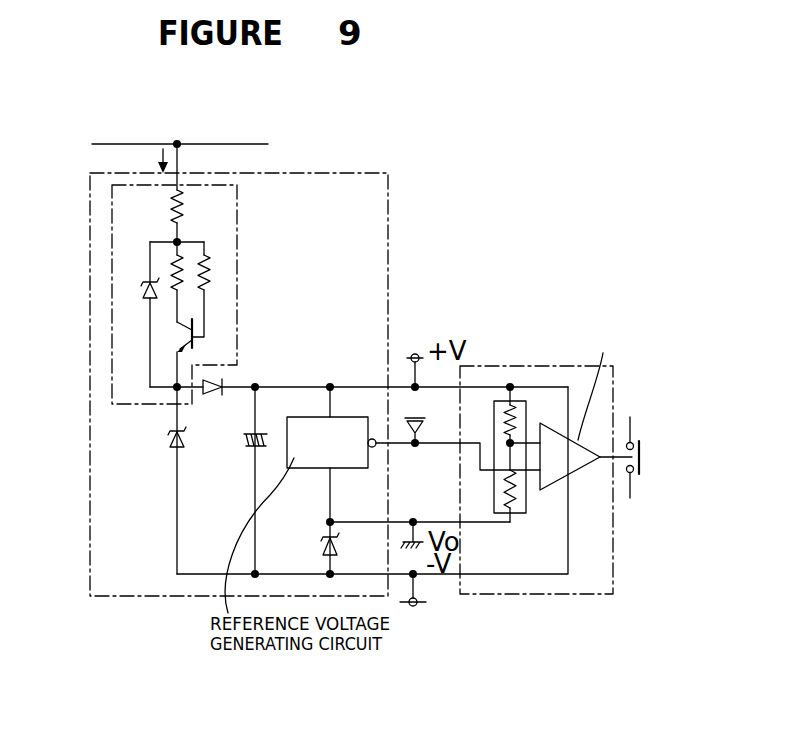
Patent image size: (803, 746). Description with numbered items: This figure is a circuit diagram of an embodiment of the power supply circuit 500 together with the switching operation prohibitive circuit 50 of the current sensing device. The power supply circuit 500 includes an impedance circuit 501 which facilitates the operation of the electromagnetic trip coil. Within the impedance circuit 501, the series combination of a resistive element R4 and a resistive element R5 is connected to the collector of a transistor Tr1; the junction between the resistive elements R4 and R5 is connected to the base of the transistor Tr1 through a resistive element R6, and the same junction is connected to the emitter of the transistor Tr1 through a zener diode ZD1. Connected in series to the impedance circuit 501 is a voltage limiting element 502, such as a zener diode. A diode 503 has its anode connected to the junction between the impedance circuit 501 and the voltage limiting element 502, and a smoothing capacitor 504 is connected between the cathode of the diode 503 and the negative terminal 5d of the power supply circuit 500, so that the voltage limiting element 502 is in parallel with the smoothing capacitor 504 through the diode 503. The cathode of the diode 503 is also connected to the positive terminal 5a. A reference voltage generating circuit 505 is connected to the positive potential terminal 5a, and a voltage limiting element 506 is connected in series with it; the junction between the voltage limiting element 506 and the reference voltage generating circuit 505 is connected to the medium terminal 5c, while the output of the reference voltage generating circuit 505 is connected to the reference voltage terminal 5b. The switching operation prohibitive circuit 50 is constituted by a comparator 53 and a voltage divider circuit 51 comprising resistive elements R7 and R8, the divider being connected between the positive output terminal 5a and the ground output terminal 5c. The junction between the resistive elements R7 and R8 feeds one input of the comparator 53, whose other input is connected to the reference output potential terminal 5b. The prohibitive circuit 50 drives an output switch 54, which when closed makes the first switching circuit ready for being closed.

The power supply circuit 500 is at (350, 137).
The impedance circuit 501 is at (237, 240).
The voltage limiting element 502 is at (168, 443).
The diode 503 is at (224, 379).
The smoothing capacitor 504 is at (248, 447).
The reference voltage generating circuit 505 is at (348, 417).
The voltage limiting element 506 is at (322, 541).
The positive potential terminal 5a is at (415, 353).
The reference voltage terminal 5b is at (434, 417).
The medium terminal 5c is at (414, 518).
The negative terminal 5d is at (413, 606).
The switching operation prohibitive circuit 50 is at (528, 365).
The voltage divider circuit 51 is at (493, 415).
The comparator 53 is at (575, 470).
The output switch 54 is at (633, 487).
The resistive element R4 is at (199, 207).
The resistive element R5 is at (187, 282).
The resistive element R6 is at (220, 289).
The resistive element R7 is at (513, 421).
The resistive element R8 is at (489, 482).
The zener diode ZD1 is at (141, 280).
The transistor Tr1 is at (180, 337).